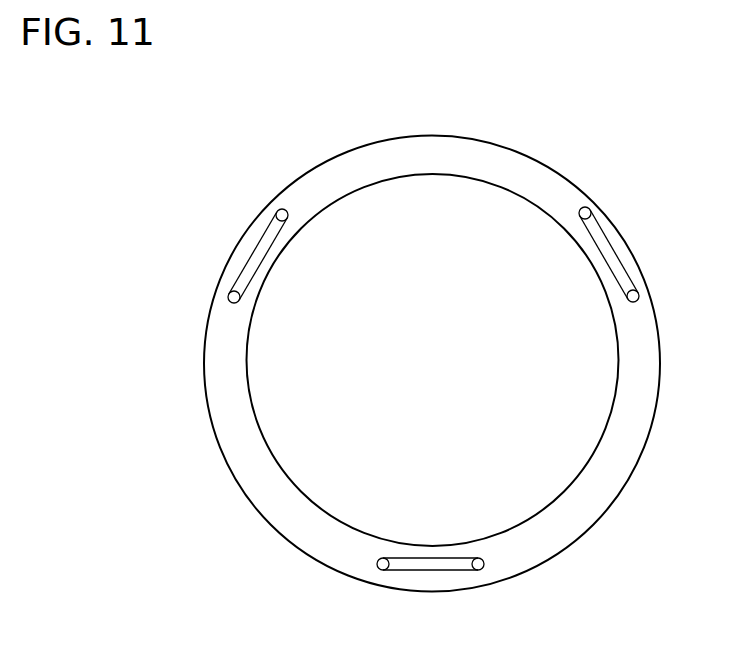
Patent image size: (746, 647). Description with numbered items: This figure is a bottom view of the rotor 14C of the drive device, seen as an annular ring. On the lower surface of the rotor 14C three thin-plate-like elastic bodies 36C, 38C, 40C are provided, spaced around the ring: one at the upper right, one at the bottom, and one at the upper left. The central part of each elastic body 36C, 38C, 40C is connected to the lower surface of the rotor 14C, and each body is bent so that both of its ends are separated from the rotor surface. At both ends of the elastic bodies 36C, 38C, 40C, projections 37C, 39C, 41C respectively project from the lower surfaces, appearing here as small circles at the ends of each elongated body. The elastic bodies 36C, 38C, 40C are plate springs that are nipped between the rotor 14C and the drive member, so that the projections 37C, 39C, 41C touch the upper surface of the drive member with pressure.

The rotor 14C is at (463, 145).
The elastic body 36C is at (602, 245).
The projection 37C is at (587, 210).
The elastic body 38C is at (424, 565).
The projection 39C is at (382, 570).
The elastic body 40C is at (253, 263).
The projection 41C is at (277, 210).